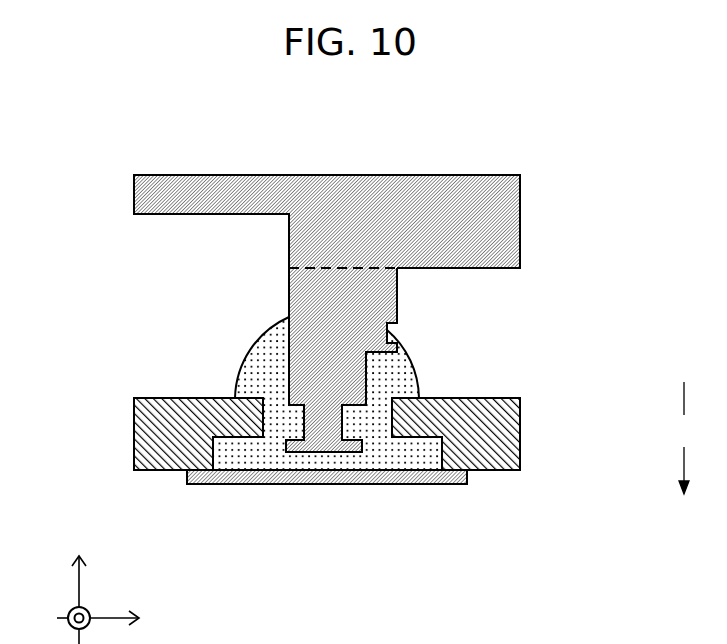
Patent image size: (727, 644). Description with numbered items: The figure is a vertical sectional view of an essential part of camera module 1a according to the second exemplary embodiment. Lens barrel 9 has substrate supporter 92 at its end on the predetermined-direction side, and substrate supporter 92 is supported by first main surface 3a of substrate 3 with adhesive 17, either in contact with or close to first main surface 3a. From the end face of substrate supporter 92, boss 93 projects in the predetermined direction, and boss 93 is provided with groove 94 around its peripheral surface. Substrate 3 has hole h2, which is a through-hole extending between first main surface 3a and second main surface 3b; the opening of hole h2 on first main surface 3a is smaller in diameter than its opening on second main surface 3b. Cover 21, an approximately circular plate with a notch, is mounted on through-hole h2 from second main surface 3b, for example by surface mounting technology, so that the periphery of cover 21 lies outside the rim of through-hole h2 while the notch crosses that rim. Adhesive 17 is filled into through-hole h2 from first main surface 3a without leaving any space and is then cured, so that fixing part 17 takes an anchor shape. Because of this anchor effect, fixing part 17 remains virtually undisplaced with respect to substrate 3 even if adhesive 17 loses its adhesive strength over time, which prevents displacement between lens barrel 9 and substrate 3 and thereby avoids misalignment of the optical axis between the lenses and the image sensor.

The camera module 1a is at (73, 126).
The lens barrel 9 is at (372, 280).
The substrate supporter 92 is at (382, 313).
The boss 93 is at (363, 380).
The substrate 3 is at (371, 426).
The first main surface 3a is at (493, 397).
The second main surface 3b is at (492, 470).
The cover 21 is at (233, 484).
The groove 94 is at (344, 417).
The adhesive (fixing part) 17 is at (407, 452).
The hole (through-hole) h2 is at (276, 407).